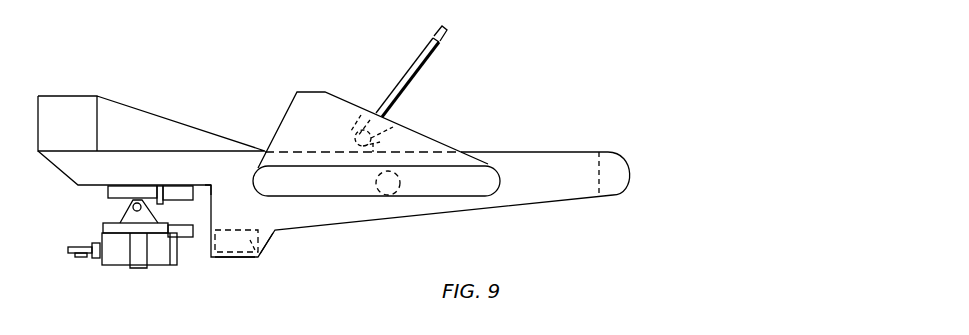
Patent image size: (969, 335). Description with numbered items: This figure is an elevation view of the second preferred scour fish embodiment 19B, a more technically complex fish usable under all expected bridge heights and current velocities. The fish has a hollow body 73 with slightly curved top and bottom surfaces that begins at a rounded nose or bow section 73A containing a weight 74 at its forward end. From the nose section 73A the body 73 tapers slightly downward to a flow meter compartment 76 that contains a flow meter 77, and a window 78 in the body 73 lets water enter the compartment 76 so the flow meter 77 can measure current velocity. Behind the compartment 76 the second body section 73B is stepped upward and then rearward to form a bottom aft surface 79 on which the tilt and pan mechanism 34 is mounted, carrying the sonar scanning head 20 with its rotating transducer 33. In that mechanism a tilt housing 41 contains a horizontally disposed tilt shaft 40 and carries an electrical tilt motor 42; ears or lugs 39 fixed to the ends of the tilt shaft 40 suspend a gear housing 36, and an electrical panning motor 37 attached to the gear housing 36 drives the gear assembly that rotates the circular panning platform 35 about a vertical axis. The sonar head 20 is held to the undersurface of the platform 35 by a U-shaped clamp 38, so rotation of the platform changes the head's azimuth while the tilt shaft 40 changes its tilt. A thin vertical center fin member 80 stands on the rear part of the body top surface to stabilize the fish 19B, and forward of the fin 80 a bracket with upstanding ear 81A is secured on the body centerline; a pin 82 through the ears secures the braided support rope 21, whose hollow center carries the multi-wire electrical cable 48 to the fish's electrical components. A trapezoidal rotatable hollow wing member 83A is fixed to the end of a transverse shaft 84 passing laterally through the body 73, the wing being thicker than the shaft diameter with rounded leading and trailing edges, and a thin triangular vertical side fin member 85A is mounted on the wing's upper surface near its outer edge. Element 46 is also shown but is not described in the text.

The second scour fish embodiment 19B is at (472, 136).
The sonar scanning head 20 is at (115, 265).
The braided support rope 21 is at (400, 75).
The rotating transducer 33 is at (76, 258).
The tilt and panning mechanism 34 is at (102, 212).
The circular panning platform 35 is at (102, 233).
The gear housing 36 is at (103, 226).
The electrical panning motor 37 is at (183, 237).
The U-shaped clamp 38 is at (138, 268).
The ears or lugs 39 is at (125, 212).
The tilt shaft 40 is at (141, 205).
The tilt housing 41 is at (118, 192).
The electrical tilt motor 42 is at (209, 184).
The connector 46 is at (98, 258).
The multi-wire electrical cable 48 is at (445, 32).
The hollow body 73 is at (252, 222).
The nose or bow section 73A is at (562, 152).
The second body section 73B is at (211, 152).
The weight 74 is at (620, 175).
The flow meter compartment 76 is at (240, 257).
The flow meter 77 is at (258, 257).
The window 78 is at (274, 234).
The bottom aft surface 79 is at (76, 186).
The vertical center fin member 80 is at (125, 105).
The upstanding ear 81A is at (332, 150).
The pin 82 is at (393, 127).
The wing member 83A is at (482, 178).
The transverse shaft 84 is at (402, 185).
The vertical side fin member 85A is at (336, 94).